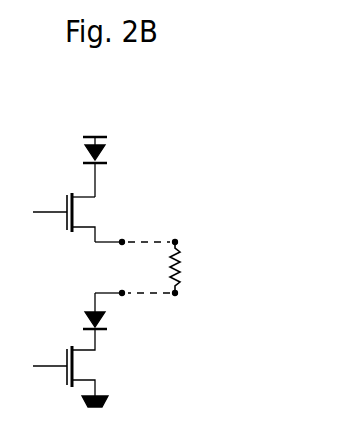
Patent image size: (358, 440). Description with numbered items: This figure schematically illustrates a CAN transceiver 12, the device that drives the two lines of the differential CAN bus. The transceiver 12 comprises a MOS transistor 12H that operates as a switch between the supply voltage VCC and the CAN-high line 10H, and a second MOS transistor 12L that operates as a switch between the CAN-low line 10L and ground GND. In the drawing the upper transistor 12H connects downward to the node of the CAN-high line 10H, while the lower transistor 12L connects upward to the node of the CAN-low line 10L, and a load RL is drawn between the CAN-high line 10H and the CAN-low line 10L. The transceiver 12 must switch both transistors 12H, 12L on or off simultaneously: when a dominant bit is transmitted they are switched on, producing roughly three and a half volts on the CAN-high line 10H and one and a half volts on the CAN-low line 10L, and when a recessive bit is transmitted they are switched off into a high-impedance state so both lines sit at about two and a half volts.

The CAN transceiver 12 is at (226, 135).
The MOS transistor 12H is at (107, 189).
The MOS transistor 12L is at (95, 350).
The CAN-high line 10H is at (169, 232).
The CAN-low line 10L is at (170, 318).
The load resistor RL is at (209, 272).